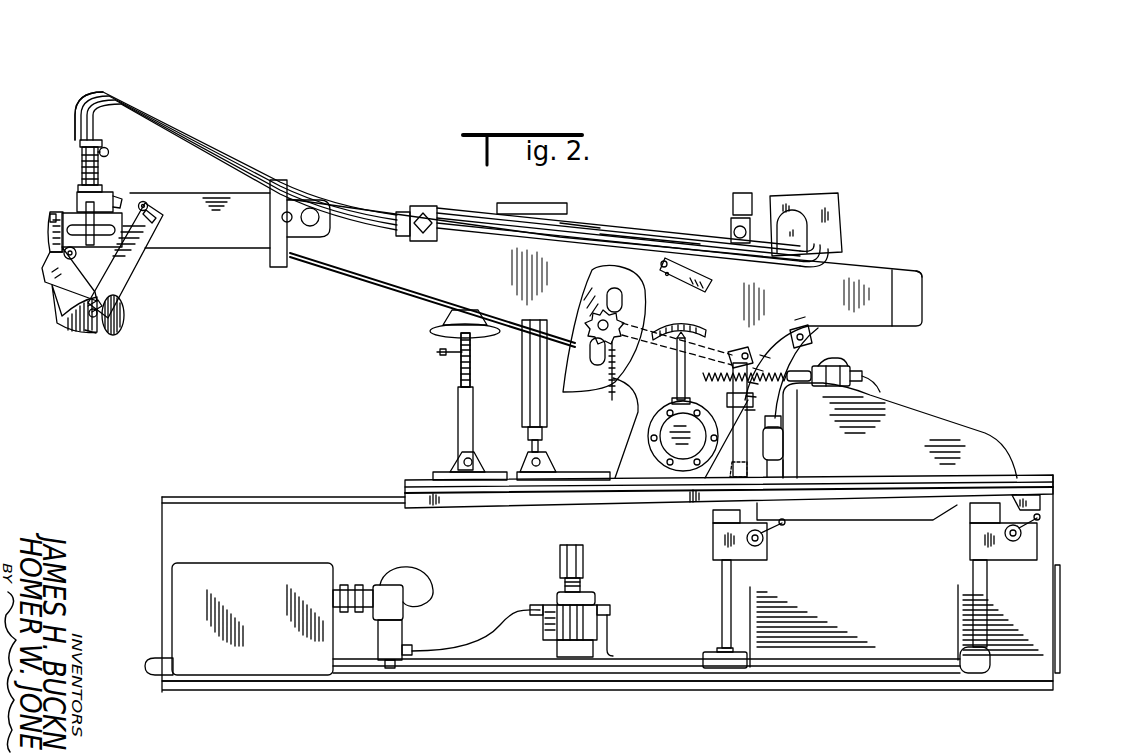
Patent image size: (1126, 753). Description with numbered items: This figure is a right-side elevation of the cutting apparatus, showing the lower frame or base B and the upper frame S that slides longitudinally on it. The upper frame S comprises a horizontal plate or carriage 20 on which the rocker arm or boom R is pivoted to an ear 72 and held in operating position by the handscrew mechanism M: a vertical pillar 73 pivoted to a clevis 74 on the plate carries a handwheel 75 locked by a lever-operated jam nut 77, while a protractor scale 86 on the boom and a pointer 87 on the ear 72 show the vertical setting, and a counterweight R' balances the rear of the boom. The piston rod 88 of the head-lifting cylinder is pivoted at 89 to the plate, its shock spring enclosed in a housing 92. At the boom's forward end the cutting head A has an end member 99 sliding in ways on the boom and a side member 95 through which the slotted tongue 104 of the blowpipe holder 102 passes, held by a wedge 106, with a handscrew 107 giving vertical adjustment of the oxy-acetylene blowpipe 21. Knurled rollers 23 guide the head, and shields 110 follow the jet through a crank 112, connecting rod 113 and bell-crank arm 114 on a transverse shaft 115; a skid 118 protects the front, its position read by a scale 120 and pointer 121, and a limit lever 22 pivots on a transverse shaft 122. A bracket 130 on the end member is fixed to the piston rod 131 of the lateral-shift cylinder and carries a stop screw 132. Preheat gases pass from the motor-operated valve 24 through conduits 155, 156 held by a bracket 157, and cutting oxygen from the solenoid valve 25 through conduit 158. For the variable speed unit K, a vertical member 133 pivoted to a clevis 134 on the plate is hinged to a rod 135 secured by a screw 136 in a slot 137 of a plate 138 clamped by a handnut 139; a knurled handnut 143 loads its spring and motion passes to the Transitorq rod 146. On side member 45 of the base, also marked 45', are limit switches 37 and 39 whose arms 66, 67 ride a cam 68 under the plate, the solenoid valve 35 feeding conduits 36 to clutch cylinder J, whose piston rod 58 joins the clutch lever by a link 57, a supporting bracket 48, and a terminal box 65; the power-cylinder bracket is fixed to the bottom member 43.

The horizontal plate or carriage 20 is at (410, 480).
The oxy-acetylene cutting blowpipe 21 is at (82, 166).
The limit lever 22 is at (58, 322).
The rollers 23 is at (90, 333).
The motor-operated valve 24 is at (838, 200).
The solenoid operated valve 25 is at (733, 200).
The solenoid operated valve 35 is at (405, 632).
The conduits 36 is at (500, 626).
The limit switch 37 is at (767, 557).
The limit switch 39 is at (1020, 549).
The bottom member 43 is at (750, 672).
The side member 45 is at (626, 583).
The frame rail 45' is at (283, 488).
The bracket 48 is at (572, 658).
The second link 57 is at (560, 558).
The piston rod 58 is at (565, 582).
The terminal box 65 is at (258, 568).
The operating arm 66 is at (765, 536).
The operating arm 67 is at (1040, 528).
The cam 68 is at (1040, 498).
The ear 72 is at (648, 438).
The vertical pillar 73 is at (458, 410).
The clevis 74 is at (456, 466).
The handwheel 75 is at (482, 334).
The lever-operated jam nut 77 is at (470, 353).
The protractor scale 86 is at (700, 327).
The pointer 87 is at (677, 371).
The piston rod 88 is at (542, 434).
The pivot attachment 89 is at (548, 461).
The housing 92 is at (522, 409).
The side member 95 is at (198, 248).
The end member 99 is at (270, 256).
The blowpipe holder 102 is at (114, 195).
The slotted tongue 104 is at (62, 228).
The key or wedge 106 is at (90, 248).
The handscrew 107 is at (103, 178).
The shields 110 is at (124, 318).
The crank 112 is at (100, 309).
The connecting rod 113 is at (135, 262).
The arm of bell crank 114 is at (154, 216).
The transverse shaft 115 is at (147, 204).
The skid 118 is at (50, 276).
The scale 120 is at (57, 212).
The pointer 121 is at (52, 216).
The transverse shaft 122 is at (64, 253).
The bracket 130 is at (305, 200).
The piston rod 131 is at (318, 212).
The screw 132 is at (289, 223).
The vertical member 133 is at (748, 438).
The clevis 134 is at (732, 473).
The rod 135 is at (712, 349).
The screw 136 is at (572, 384).
The slot 137 is at (622, 320).
The plate 138 is at (647, 292).
The handnut 139 is at (612, 402).
The knurled handnut 143 is at (781, 422).
The Transitorq rod 146 is at (790, 371).
The conduit 155 is at (640, 250).
The conduit 156 is at (548, 226).
The bracket 157 is at (425, 206).
The conduit 158 is at (505, 203).
The cutting head A is at (148, 137).
The lower frame or base B is at (492, 692).
The air-operated cylinder J is at (592, 606).
The motor-control unit K is at (845, 367).
The adjustable handscrew mechanism M is at (449, 374).
The rocker arm or boom R is at (605, 299).
The counterweight R' is at (912, 257).
The upper frame S is at (646, 226).